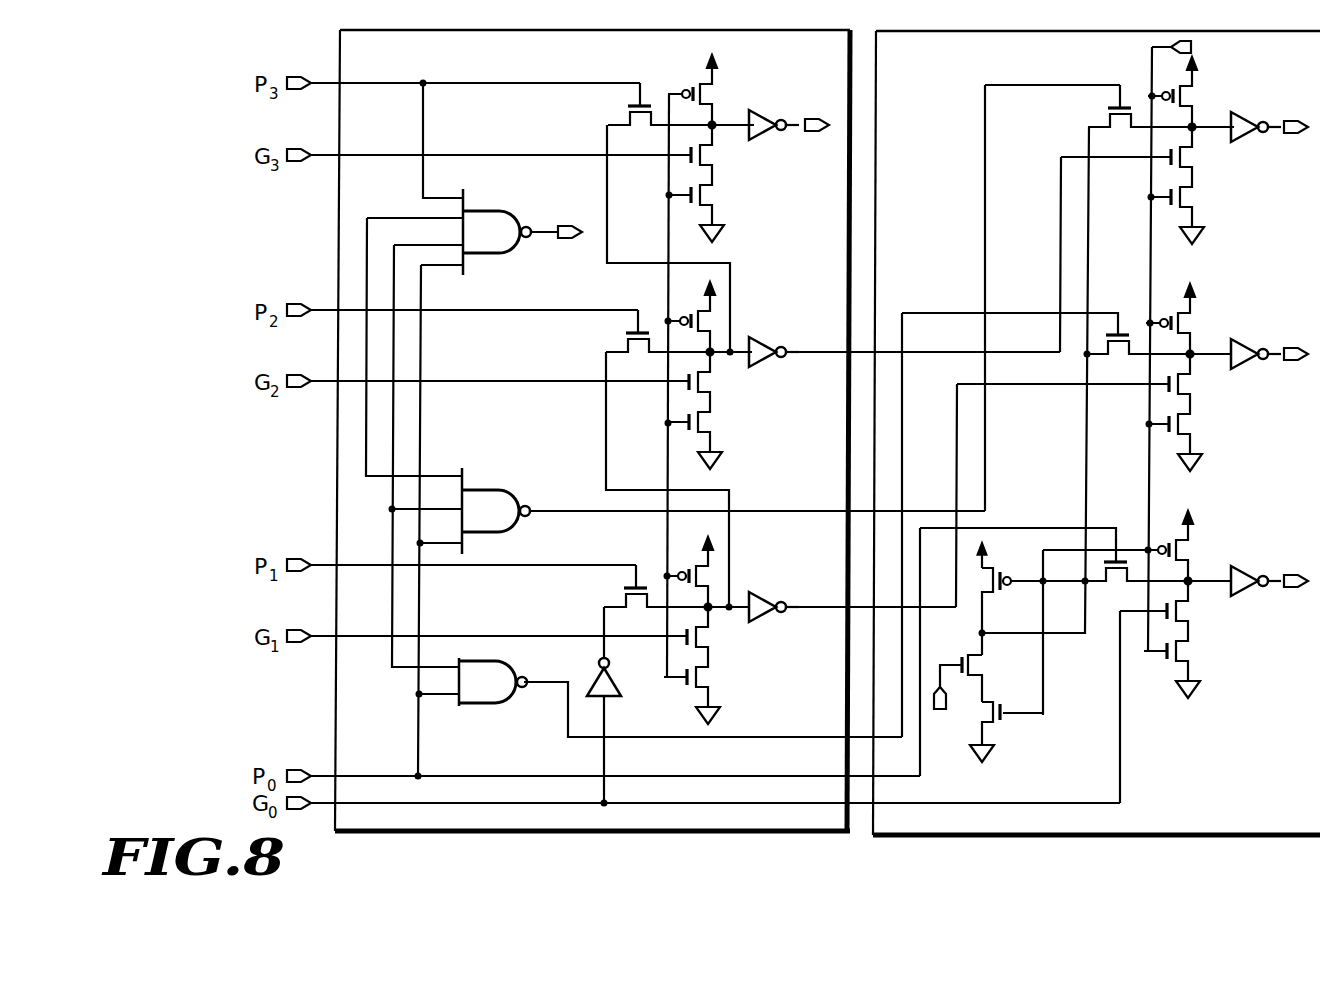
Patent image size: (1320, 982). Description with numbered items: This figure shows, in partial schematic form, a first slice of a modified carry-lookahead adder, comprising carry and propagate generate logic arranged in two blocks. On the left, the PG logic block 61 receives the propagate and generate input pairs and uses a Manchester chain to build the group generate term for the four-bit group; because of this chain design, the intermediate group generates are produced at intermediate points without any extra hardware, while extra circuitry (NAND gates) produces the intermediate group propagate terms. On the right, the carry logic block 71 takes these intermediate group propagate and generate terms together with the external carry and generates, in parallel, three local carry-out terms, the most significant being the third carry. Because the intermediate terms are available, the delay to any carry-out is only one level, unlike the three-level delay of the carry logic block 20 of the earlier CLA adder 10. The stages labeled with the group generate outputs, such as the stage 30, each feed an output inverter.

The PG logic block 61 is at (755, 30).
The carry logic block 71 is at (960, 31).
The group generate G30 output stage 30 is at (718, 148).
The carry logic block 20 is at (703, 375).
The CLA adder 10 is at (701, 630).